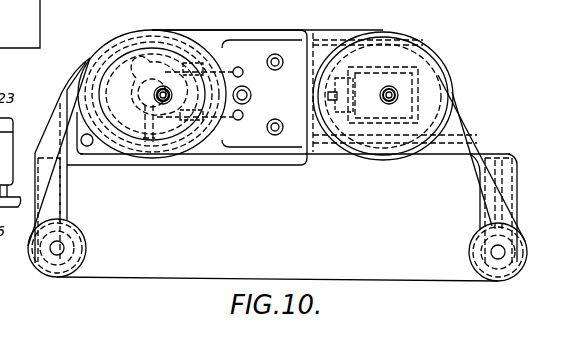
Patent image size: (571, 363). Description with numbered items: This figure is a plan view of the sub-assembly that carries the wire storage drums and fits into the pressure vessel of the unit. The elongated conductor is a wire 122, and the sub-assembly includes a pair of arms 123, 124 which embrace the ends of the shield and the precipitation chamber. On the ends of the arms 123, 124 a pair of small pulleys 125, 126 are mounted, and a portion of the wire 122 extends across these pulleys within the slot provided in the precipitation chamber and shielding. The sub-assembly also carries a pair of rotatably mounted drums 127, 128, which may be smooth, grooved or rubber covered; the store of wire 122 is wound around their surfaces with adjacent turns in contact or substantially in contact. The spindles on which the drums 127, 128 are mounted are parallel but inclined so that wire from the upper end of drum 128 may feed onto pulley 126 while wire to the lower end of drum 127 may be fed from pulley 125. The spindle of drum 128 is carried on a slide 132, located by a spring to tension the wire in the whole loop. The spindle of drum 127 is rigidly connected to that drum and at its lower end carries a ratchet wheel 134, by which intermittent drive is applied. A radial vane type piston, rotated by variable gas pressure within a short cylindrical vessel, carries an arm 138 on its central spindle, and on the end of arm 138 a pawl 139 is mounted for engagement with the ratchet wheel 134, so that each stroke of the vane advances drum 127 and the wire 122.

The wire 122 is at (454, 279).
The arm 123 is at (508, 185).
The arm 124 is at (40, 155).
The small pulley 125 is at (36, 263).
The small pulley 126 is at (515, 259).
The drum 127 is at (198, 47).
The drum 128 is at (430, 45).
The slide 132 is at (366, 90).
The ratchet wheel 134 is at (104, 53).
The arm 138 is at (146, 44).
The pawl 139 is at (167, 157).